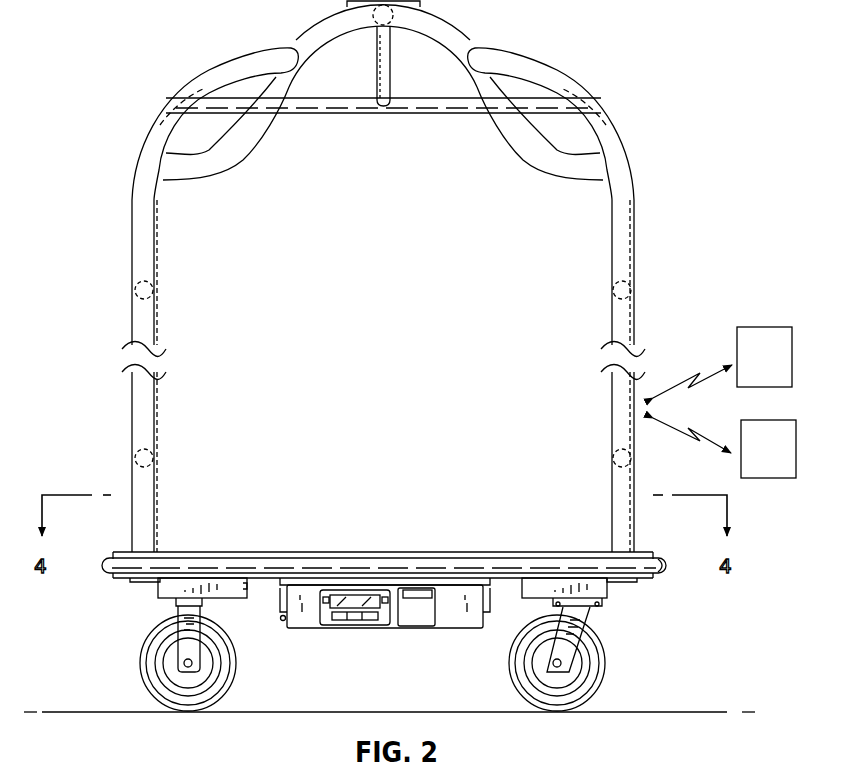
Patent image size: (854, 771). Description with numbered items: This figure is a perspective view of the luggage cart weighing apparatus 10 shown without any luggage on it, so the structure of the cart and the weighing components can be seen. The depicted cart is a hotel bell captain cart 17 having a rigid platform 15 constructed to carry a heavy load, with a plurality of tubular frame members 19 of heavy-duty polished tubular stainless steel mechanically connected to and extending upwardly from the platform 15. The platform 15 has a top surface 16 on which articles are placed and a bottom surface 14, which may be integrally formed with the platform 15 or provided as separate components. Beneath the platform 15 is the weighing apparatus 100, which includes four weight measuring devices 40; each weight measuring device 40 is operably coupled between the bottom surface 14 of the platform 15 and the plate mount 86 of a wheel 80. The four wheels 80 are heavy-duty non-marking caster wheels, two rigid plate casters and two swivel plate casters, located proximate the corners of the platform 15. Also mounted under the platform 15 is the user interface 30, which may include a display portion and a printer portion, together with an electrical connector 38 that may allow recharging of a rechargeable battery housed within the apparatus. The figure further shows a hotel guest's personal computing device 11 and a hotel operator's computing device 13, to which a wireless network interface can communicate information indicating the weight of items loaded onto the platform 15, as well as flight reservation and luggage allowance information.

The luggage cart weighing apparatus 10 is at (152, 45).
The hotel bell captain cart 17 is at (617, 102).
The tubular frame members 19 is at (627, 202).
The personal computing device 11 is at (777, 367).
The hotel operator's computing device 13 is at (781, 460).
The top surface 16 is at (305, 550).
The platform 15 is at (670, 565).
The bottom surface 14 is at (267, 578).
The weighing apparatus 100 is at (127, 595).
The electrical connector 38 is at (283, 622).
The user interface 30 is at (355, 637).
The weight measuring device 40 is at (523, 598).
The plate mount 86 is at (600, 607).
The wheels 80 is at (607, 655).